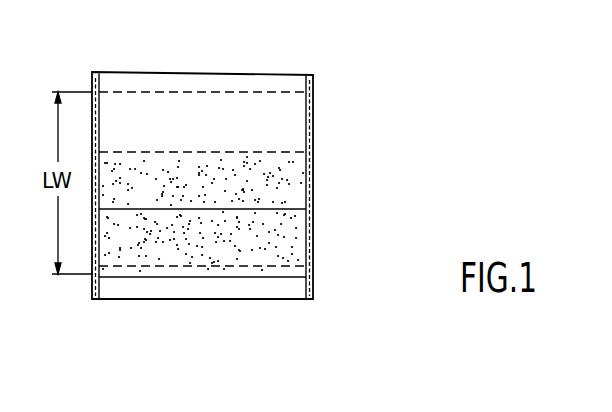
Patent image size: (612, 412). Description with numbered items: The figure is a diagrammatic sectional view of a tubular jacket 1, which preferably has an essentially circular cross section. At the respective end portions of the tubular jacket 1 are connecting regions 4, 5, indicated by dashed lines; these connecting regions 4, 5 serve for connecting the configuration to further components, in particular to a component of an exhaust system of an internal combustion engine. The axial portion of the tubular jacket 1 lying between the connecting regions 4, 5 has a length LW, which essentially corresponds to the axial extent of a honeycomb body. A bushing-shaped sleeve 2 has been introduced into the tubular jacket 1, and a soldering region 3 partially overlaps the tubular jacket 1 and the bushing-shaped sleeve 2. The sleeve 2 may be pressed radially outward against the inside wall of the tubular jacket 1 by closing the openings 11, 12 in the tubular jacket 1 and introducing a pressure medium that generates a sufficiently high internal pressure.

The tubular jacket 1 is at (313, 121).
The bushing-shaped sleeve 2 is at (313, 233).
The soldering region 3 is at (300, 183).
The connecting region 4 is at (278, 87).
The connecting region 5 is at (216, 291).
The opening 11 is at (118, 54).
The opening 12 is at (120, 306).